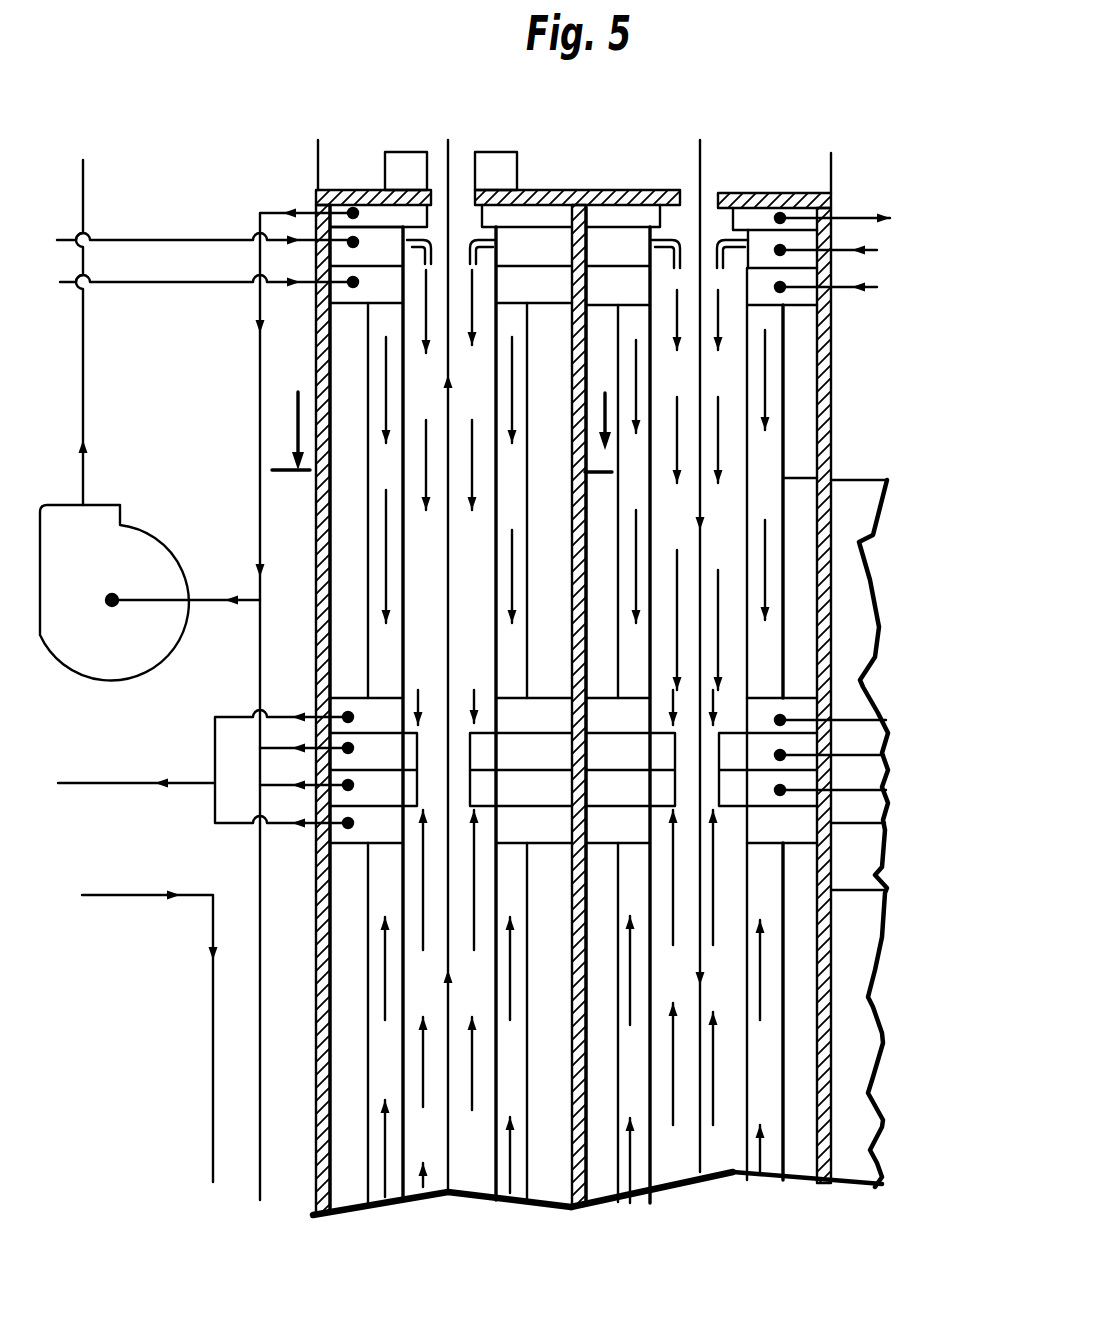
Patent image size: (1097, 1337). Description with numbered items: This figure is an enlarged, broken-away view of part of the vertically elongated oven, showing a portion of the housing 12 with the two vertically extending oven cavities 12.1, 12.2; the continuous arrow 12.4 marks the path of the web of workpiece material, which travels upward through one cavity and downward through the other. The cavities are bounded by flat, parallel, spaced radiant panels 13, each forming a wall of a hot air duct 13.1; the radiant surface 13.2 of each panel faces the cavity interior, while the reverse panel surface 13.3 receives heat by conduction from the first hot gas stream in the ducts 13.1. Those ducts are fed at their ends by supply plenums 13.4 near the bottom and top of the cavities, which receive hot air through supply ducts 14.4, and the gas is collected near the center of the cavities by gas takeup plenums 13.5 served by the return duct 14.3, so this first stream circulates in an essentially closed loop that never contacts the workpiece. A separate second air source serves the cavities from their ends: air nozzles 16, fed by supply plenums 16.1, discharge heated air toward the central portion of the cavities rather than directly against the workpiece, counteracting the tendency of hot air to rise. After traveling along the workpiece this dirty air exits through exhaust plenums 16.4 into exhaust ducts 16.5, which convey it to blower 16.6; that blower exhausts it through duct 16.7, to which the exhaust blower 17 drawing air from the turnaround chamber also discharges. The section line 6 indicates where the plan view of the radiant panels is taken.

The section line VI-VI 6 is at (446, 411).
The housing 12 is at (316, 1060).
The oven cavity 12.1 is at (462, 1190).
The oven cavity 12.2 is at (722, 1150).
The workpiece path arrow 12.4 is at (702, 168).
The radiant panel 13 is at (496, 638).
The hot air duct 13.1 is at (378, 466).
The radiant surface 13.2 is at (403, 1057).
The reverse panel surface 13.3 is at (497, 482).
The supply plenum 13.4 is at (360, 293).
The gas takeup plenum 13.5 is at (342, 698).
The return duct 14.3 is at (128, 782).
The supply duct 14.4 is at (180, 284).
The air nozzle 16 is at (420, 236).
The supply plenum 16.1 is at (400, 254).
The exhaust plenum 16.4 is at (405, 764).
The exhaust duct 16.5 is at (260, 405).
The blower 16.6 is at (147, 647).
The exhaust duct 16.7 is at (85, 378).
The exhaust blower 17 is at (350, 200).